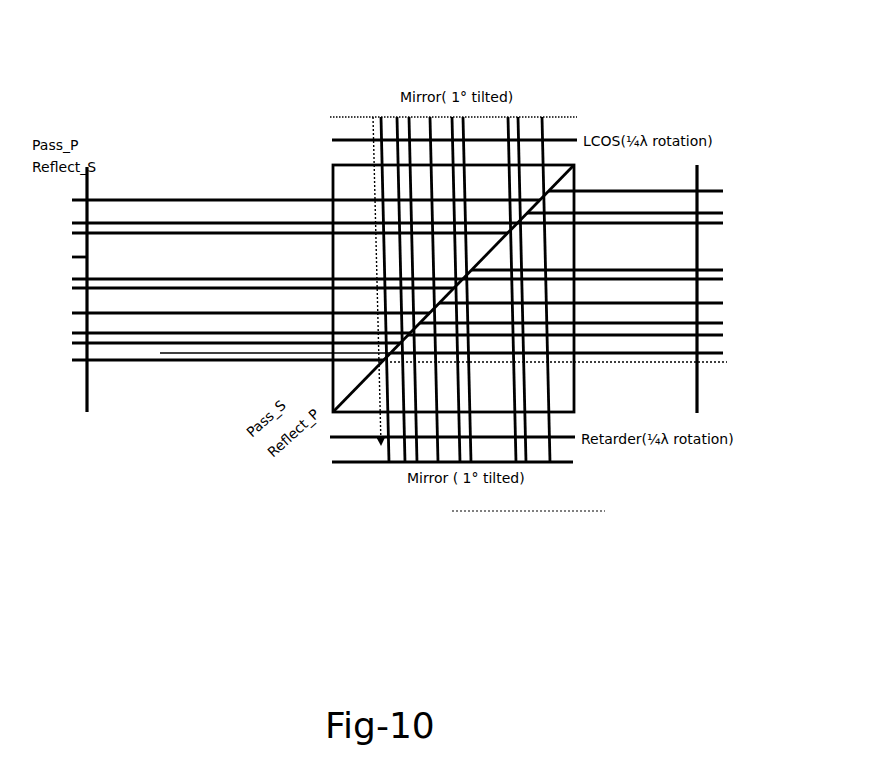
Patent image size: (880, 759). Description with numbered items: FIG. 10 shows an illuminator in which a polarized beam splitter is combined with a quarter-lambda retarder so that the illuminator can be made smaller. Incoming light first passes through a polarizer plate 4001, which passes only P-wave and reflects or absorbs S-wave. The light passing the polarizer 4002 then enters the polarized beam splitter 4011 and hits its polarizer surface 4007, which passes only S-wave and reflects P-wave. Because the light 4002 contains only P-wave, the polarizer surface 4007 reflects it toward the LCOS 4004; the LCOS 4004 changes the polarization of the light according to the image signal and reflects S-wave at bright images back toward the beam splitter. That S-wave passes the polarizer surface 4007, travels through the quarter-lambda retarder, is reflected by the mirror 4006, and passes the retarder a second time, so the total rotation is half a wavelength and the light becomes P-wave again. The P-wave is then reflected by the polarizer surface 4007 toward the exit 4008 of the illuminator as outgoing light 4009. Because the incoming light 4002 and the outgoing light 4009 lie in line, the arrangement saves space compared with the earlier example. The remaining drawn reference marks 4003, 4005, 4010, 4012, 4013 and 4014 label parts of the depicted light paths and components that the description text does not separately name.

The polarizer plate 4001 is at (83, 398).
The light passing the polarizer 4002 is at (160, 190).
The tilted mirror (top) 4003 is at (541, 112).
The LCOS 4004 is at (573, 138).
The quarter-wave retarder (bottom) 4005 is at (580, 442).
The mirror 4006 is at (562, 467).
The polarizer surface 4007 is at (340, 397).
The exit 4008 is at (701, 171).
The outgoing light 4009 is at (723, 263).
The returning beam 4010 is at (282, 343).
The polarized beam splitter 4011 is at (364, 245).
The vertical beam path (left) 4012 is at (368, 407).
The vertical beam path (right) 4013 is at (404, 427).
The output beam 4014 is at (714, 365).